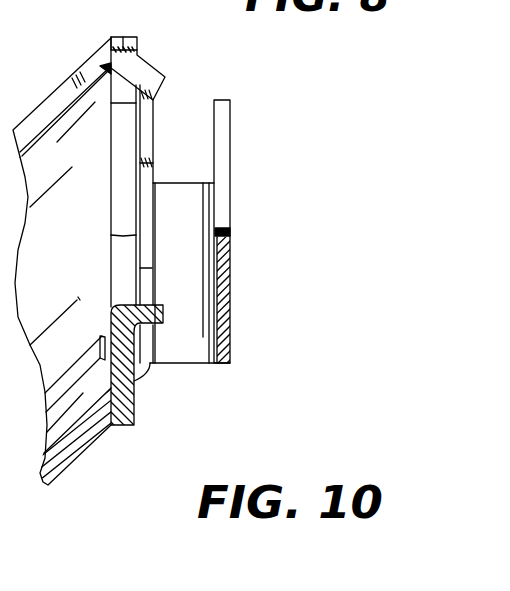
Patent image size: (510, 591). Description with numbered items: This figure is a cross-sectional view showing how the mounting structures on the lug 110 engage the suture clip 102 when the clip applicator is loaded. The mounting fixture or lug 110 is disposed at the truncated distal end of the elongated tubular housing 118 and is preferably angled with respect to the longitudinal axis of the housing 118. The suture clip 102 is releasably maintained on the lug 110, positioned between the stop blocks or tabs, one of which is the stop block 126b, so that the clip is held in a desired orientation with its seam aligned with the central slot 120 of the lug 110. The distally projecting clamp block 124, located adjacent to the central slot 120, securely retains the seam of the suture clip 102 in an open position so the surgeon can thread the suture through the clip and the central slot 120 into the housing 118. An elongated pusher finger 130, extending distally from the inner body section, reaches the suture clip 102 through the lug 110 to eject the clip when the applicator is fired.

The suture clip 102 is at (223, 220).
The mounting fixture or lug 110 is at (123, 37).
The elongated tubular housing 118 is at (50, 107).
The central slot 120 is at (121, 213).
The clamp block 124 is at (165, 307).
The stop block or tab 126b is at (160, 83).
The pusher finger 130 is at (92, 364).